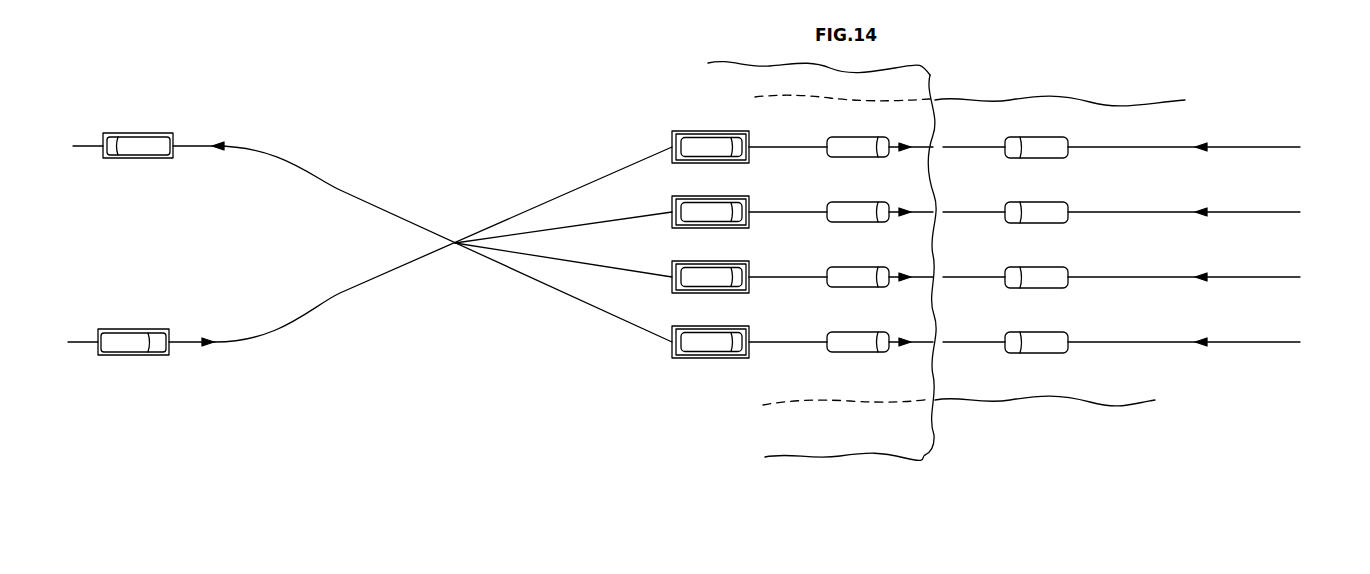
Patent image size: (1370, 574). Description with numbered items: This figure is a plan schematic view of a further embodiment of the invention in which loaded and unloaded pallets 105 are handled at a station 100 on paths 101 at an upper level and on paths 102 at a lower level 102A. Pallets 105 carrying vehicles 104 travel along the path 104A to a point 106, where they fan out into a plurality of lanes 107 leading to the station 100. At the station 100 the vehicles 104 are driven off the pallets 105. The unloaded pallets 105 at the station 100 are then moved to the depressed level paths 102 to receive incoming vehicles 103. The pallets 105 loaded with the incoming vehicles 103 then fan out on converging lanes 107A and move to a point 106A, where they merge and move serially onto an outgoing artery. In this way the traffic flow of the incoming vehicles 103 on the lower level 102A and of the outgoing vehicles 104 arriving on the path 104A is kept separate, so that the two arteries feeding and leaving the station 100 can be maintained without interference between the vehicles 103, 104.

The station 100 is at (684, 374).
The paths 101 is at (802, 356).
The paths 102 is at (1073, 409).
The lower level 102A is at (1257, 147).
The incoming vehicles 103 is at (134, 145).
The vehicles 104 is at (122, 338).
The path 104A is at (775, 342).
The pallets 105 is at (163, 133).
The point 106 is at (457, 240).
The point 106A is at (443, 244).
The lanes 107 is at (578, 222).
The converging lanes 107A is at (553, 260).